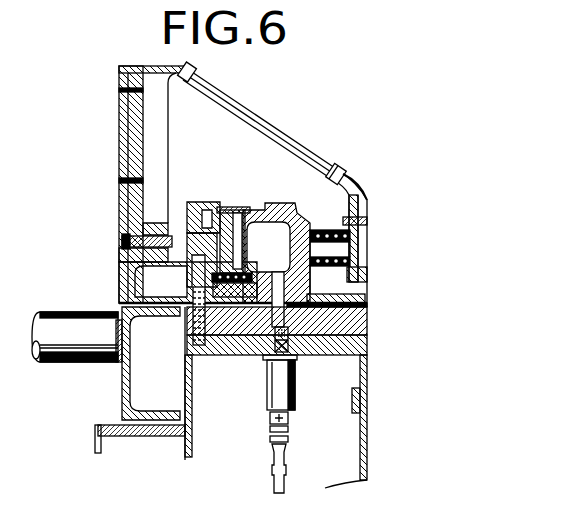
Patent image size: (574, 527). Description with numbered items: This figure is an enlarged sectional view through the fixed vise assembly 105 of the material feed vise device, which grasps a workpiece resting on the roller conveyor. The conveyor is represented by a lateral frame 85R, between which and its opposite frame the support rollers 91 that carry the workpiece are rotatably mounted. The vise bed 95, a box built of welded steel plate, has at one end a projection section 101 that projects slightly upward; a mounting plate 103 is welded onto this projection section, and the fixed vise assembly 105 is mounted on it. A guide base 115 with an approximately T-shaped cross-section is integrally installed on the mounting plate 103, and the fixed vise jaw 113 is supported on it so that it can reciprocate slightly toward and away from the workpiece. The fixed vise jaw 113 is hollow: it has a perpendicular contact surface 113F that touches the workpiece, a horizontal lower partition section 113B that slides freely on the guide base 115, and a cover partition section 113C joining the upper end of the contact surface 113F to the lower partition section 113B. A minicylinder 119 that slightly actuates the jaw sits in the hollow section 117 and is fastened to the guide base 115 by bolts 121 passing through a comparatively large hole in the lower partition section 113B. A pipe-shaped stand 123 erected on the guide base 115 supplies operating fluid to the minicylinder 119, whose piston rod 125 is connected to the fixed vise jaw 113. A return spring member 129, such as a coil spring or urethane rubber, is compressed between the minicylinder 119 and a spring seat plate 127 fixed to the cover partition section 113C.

The lateral frame 85R is at (122, 392).
The support roller 91 is at (68, 312).
The vise bed 95 is at (98, 441).
The projection section 101 is at (364, 398).
The mounting plate 103 is at (360, 346).
The fixed vise assembly 105 is at (243, 97).
The fixed vise jaw 113 is at (116, 204).
The lower partition section 113B is at (118, 322).
The cover partition section 113C is at (355, 178).
The contact surface 113F is at (121, 236).
The guide base 115 is at (352, 324).
The hollow section 117 is at (258, 136).
The minicylinder 119 is at (288, 204).
The bolt 121 is at (204, 208).
The stand 123 is at (286, 350).
The piston rod 125 is at (182, 232).
The spring seat plate 127 is at (359, 263).
The return spring member 129 is at (357, 218).